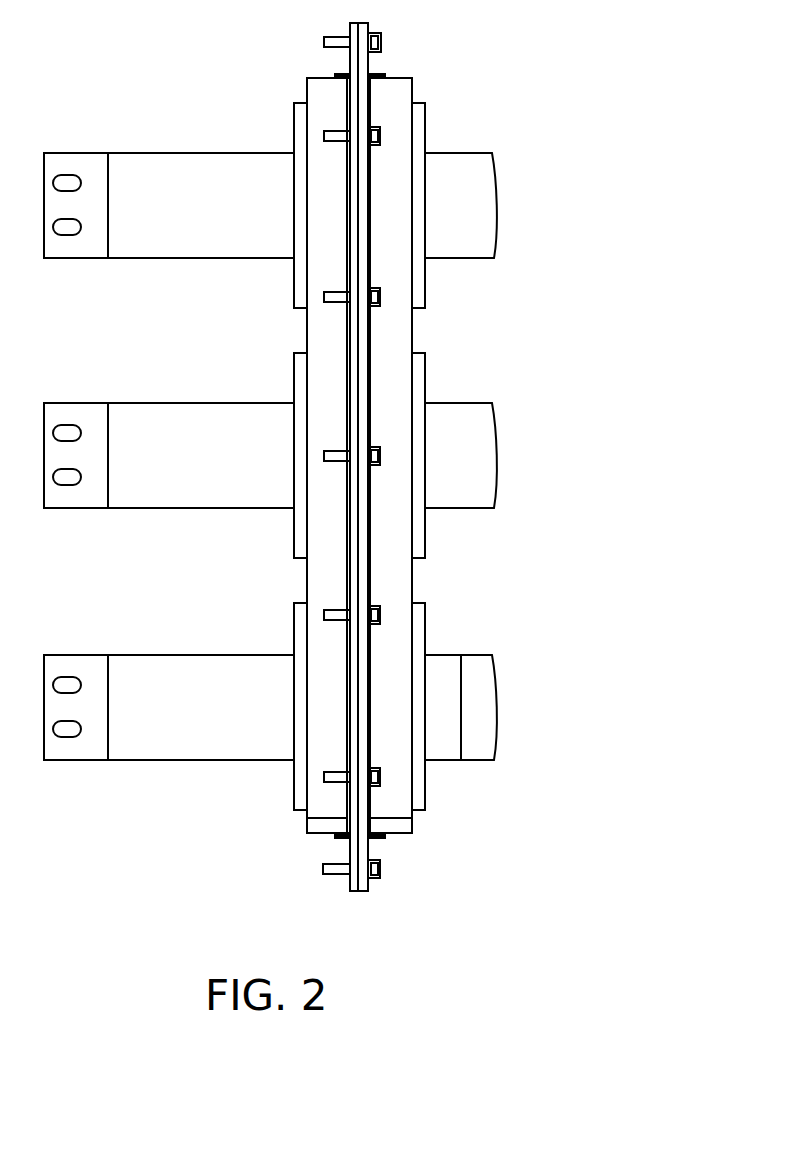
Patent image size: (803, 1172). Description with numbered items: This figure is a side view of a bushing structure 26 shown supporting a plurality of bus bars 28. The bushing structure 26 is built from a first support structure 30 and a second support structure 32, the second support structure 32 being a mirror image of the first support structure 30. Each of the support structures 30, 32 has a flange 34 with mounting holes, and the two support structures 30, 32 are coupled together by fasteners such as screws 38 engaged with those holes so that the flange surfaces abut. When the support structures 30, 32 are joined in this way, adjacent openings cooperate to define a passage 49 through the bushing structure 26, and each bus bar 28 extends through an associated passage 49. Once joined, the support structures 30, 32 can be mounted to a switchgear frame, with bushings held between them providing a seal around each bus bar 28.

The bushing structure 26 is at (411, 74).
The bus bar 28 is at (216, 219).
The first support structure 30 is at (322, 95).
The second support structure 32 is at (402, 147).
The flange 34 is at (355, 62).
The screw 38 is at (335, 874).
The passage 49 is at (293, 282).